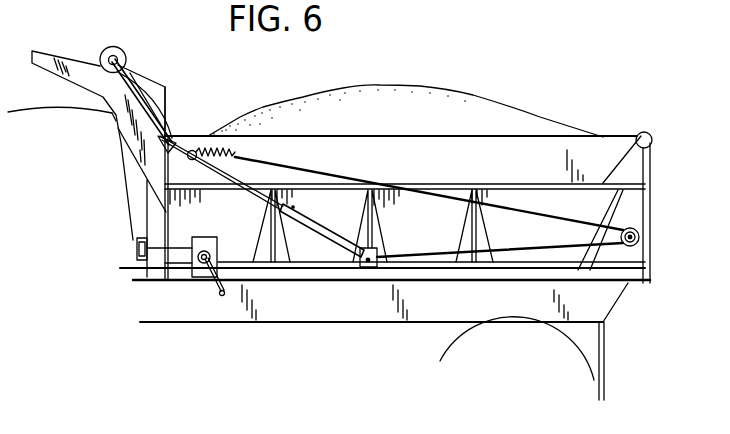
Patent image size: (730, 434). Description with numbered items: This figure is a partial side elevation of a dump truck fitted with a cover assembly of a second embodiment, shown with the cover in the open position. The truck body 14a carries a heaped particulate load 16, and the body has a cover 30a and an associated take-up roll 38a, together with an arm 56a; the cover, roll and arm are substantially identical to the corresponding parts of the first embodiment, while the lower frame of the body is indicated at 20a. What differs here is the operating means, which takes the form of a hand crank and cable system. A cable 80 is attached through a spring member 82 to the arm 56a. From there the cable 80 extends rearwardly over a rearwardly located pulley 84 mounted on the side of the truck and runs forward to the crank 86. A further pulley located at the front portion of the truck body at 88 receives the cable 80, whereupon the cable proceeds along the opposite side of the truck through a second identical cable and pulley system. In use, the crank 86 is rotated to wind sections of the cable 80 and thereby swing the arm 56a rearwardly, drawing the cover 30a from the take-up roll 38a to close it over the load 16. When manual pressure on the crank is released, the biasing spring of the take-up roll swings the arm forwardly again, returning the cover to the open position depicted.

The particulate load 16 is at (413, 88).
The truck body 14a is at (517, 138).
The frame 20a is at (444, 238).
The cover 30a is at (143, 78).
The take-up roll 38a is at (103, 49).
The arm 56a is at (172, 138).
The cable 80 is at (346, 176).
The spring member 82 is at (233, 152).
The pulley 84 is at (641, 236).
The crank 86 is at (203, 277).
The pulley 88 is at (137, 262).